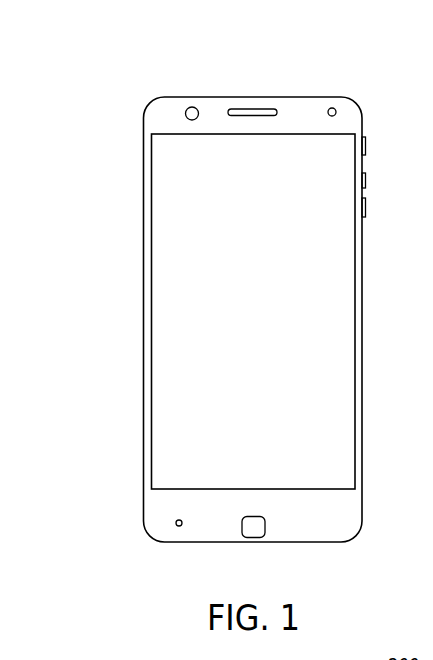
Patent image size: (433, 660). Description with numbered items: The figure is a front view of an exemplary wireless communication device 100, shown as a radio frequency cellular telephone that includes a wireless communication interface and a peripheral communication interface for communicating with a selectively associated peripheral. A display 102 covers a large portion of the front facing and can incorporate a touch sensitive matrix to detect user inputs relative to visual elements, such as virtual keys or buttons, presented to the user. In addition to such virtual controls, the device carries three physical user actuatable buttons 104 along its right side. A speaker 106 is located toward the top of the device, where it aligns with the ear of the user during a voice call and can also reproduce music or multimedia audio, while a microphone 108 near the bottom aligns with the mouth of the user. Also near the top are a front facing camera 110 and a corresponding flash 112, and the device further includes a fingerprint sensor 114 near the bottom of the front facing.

The wireless communication device 100 is at (352, 58).
The display 102 is at (166, 234).
The physical user actuatable buttons 104 is at (366, 145).
The speaker 106 is at (253, 109).
The microphone 108 is at (180, 526).
The front facing camera 110 is at (190, 107).
The flash 112 is at (331, 108).
The fingerprint sensor 114 is at (253, 538).